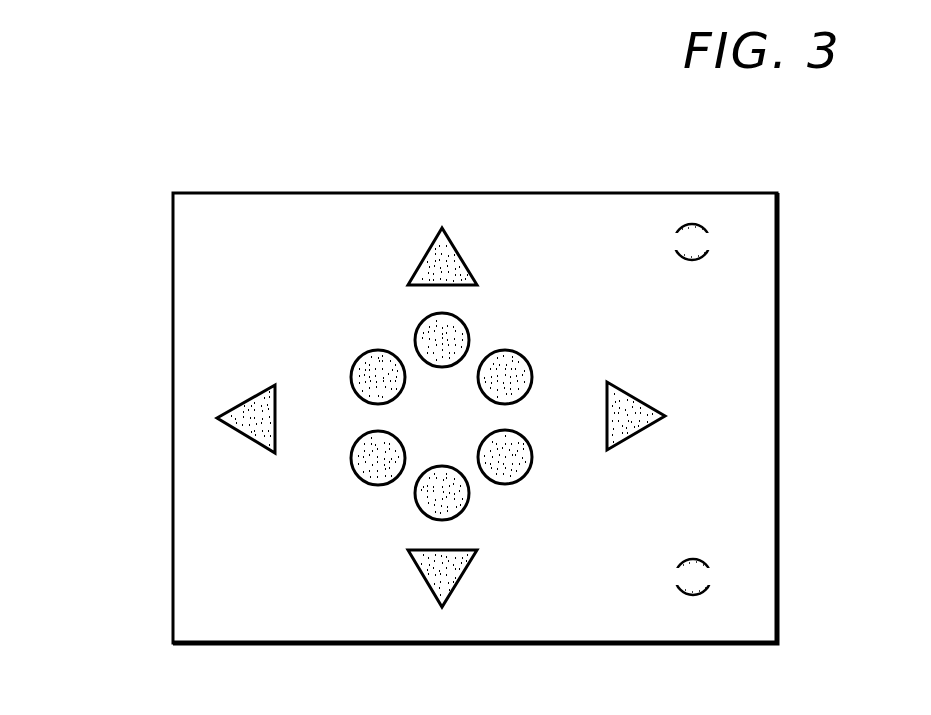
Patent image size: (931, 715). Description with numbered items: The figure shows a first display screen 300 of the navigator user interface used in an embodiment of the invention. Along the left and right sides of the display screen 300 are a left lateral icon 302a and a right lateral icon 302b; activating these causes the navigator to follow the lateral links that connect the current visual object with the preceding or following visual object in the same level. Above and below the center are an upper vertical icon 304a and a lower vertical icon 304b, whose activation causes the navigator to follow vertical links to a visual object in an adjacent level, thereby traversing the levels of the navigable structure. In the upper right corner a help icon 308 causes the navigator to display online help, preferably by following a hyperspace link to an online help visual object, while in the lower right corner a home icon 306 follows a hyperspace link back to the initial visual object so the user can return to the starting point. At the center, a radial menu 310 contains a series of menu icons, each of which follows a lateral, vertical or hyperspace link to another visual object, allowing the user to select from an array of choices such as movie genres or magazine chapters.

The display screen 300 is at (153, 128).
The left lateral icon 302a is at (237, 406).
The right lateral icon 302b is at (638, 401).
The upper vertical icon 304a is at (425, 252).
The lower vertical icon 304b is at (453, 590).
The home icon 306 is at (705, 559).
The help icon 308 is at (703, 225).
The radial menu 310 is at (357, 360).